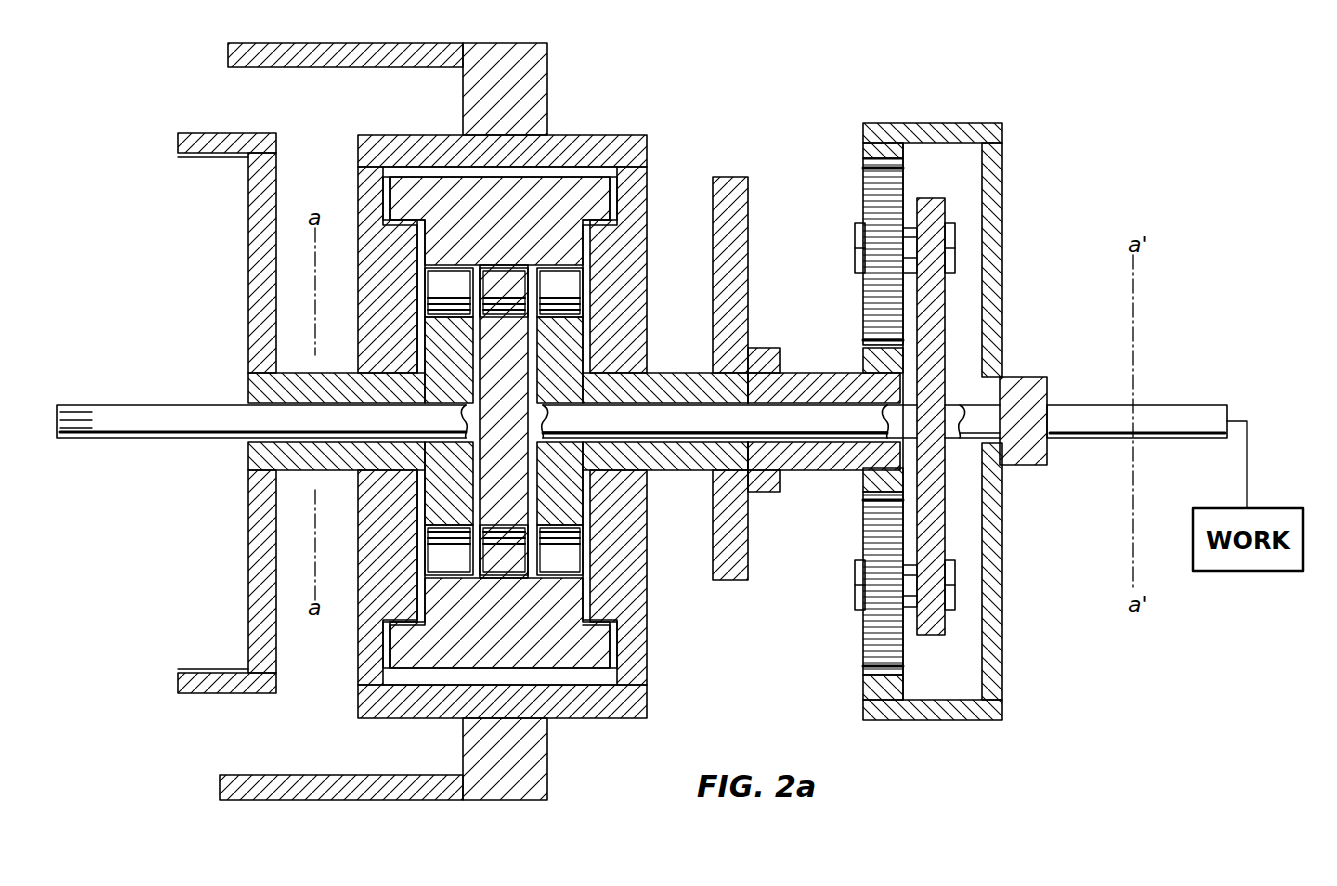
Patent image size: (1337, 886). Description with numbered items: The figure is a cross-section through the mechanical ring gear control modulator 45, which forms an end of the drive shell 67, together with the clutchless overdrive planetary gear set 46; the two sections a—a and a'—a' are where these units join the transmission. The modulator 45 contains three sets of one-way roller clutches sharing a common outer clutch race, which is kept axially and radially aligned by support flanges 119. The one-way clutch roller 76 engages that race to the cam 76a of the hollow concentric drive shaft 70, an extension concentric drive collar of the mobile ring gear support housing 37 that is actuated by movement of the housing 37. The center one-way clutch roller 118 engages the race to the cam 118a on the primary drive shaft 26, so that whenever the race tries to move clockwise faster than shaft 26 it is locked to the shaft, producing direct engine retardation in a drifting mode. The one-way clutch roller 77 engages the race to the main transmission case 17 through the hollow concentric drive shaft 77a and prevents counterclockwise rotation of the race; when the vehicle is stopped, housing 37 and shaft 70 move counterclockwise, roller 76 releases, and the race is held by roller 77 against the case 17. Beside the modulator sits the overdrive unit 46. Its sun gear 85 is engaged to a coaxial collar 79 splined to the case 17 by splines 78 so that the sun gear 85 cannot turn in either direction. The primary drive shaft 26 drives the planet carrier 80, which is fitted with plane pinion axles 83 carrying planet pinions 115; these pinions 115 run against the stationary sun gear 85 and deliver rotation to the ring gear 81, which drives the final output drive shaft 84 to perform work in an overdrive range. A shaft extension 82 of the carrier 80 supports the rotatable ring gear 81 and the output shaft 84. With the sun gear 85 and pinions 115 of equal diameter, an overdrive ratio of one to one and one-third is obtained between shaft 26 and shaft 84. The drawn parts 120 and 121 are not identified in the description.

The main transmission case 17 is at (748, 215).
The primary drive shaft 26 is at (130, 432).
The ring gear support housing 37 is at (231, 133).
The mechanical ring gear control modulator 45 is at (553, 786).
The overdrive planetary gear set 46 is at (931, 740).
The drive shell 67 is at (420, 43).
The hollow concentric drive shaft 70 is at (248, 388).
The one-way clutch roller 76 is at (437, 284).
The cam 76a is at (435, 328).
The one-way clutch roller 77 is at (570, 285).
The hollow concentric drive shaft 77a is at (565, 345).
The splines 78 is at (782, 373).
The coaxial collar 79 is at (828, 462).
The planet carrier 80 is at (937, 200).
The ring gear 81 is at (863, 163).
The shaft extension 82 is at (1008, 396).
The plane pinion axles 83 is at (858, 592).
The final output drive shaft 84 is at (1177, 405).
The sun gear 85 is at (858, 496).
The planet pinions 115 is at (862, 655).
The center one-way clutch roller 118 is at (500, 268).
The cam 118a is at (512, 487).
The support flanges 119 is at (362, 192).
The housing block 120 is at (547, 60).
The liner ring 121 is at (424, 175).